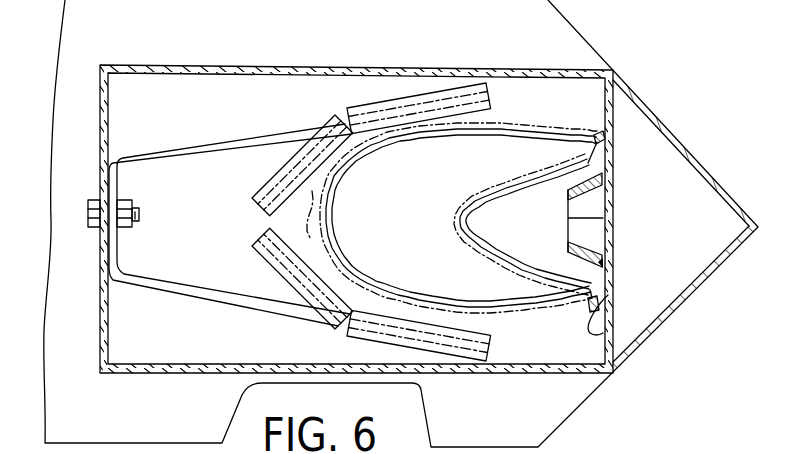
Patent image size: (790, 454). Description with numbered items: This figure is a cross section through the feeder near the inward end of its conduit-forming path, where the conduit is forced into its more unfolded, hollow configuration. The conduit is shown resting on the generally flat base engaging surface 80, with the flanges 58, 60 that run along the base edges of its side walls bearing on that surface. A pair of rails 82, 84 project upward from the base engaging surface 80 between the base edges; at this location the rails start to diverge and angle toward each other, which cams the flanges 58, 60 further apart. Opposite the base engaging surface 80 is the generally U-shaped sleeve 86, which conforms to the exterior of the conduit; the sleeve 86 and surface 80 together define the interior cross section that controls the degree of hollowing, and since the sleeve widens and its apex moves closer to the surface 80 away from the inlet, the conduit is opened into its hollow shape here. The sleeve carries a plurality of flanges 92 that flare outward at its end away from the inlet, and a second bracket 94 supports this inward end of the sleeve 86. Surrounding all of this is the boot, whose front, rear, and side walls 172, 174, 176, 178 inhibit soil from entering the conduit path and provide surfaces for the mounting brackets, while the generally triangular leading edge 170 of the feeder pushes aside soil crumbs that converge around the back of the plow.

The flange 58 is at (578, 132).
The flange 60 is at (584, 305).
The base engaging surface 80 is at (608, 295).
The rail 82 is at (591, 250).
The rail 84 is at (593, 192).
The U-shaped sleeve 86 is at (309, 260).
The flanges 92 is at (315, 155).
The second bracket 94 is at (212, 297).
The leading edge 170 is at (757, 233).
The front wall 172 is at (617, 92).
The rear wall 174 is at (100, 167).
The side wall 176 is at (426, 65).
The side wall 178 is at (460, 373).